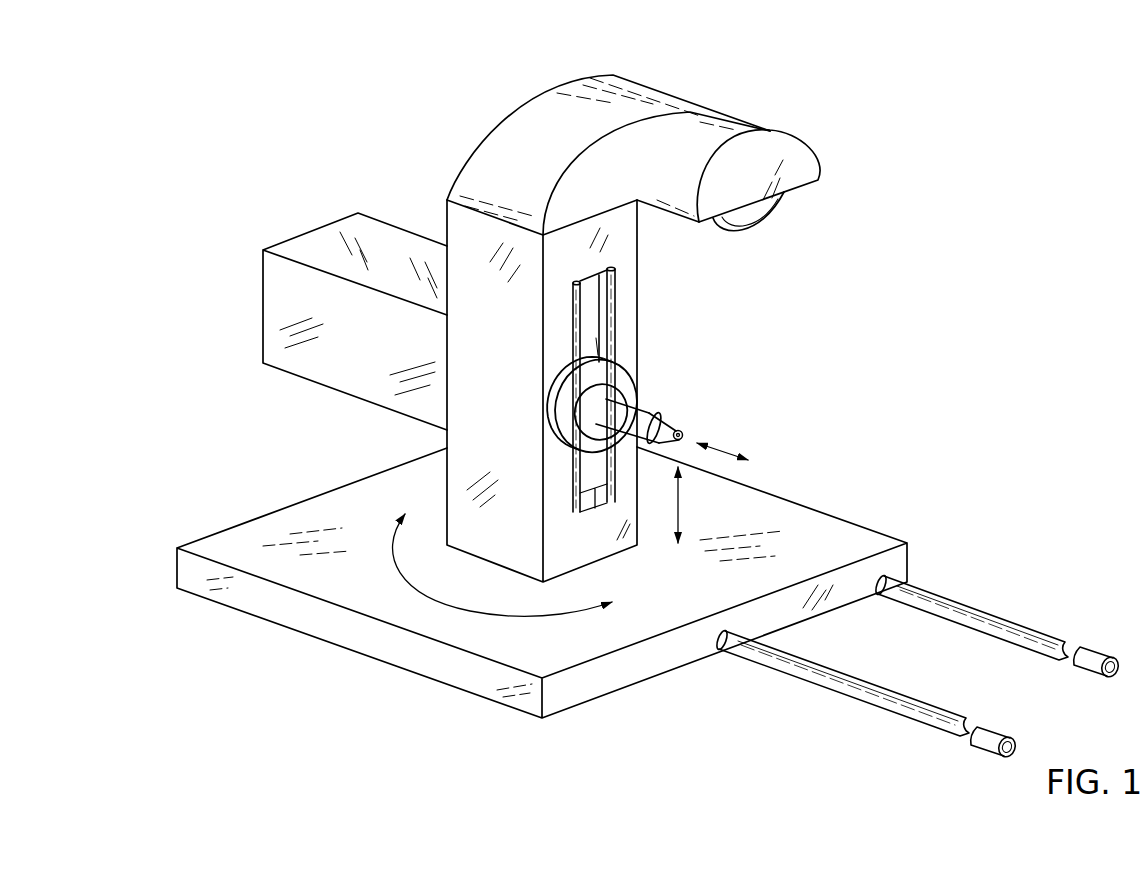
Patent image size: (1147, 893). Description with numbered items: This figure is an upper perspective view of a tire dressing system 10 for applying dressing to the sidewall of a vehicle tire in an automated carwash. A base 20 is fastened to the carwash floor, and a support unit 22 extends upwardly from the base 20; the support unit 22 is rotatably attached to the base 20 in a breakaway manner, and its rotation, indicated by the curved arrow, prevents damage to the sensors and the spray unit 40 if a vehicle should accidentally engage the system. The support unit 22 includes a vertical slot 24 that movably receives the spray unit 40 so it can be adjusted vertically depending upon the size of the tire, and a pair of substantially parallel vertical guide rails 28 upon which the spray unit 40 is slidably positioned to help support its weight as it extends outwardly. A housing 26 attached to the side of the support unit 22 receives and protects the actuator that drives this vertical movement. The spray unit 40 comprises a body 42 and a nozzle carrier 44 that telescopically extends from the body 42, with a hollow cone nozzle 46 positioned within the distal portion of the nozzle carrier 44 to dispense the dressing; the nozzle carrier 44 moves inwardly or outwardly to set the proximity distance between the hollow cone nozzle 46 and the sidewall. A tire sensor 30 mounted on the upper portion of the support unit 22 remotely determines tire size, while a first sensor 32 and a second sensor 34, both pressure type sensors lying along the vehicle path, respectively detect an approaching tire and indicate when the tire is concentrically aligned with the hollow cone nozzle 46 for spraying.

The tire dressing system 10 is at (160, 111).
The base 20 is at (256, 518).
The support unit 22 is at (447, 226).
The vertical slot 24 is at (593, 505).
The housing 26 is at (270, 297).
The vertical guide rails 28 is at (575, 288).
The tire sensor 30 is at (773, 225).
The first sensor 32 is at (987, 613).
The second sensor 34 is at (930, 730).
The spray unit 40 is at (668, 375).
The body 42 is at (614, 382).
The nozzle carrier 44 is at (654, 407).
The hollow cone nozzle 46 is at (684, 435).